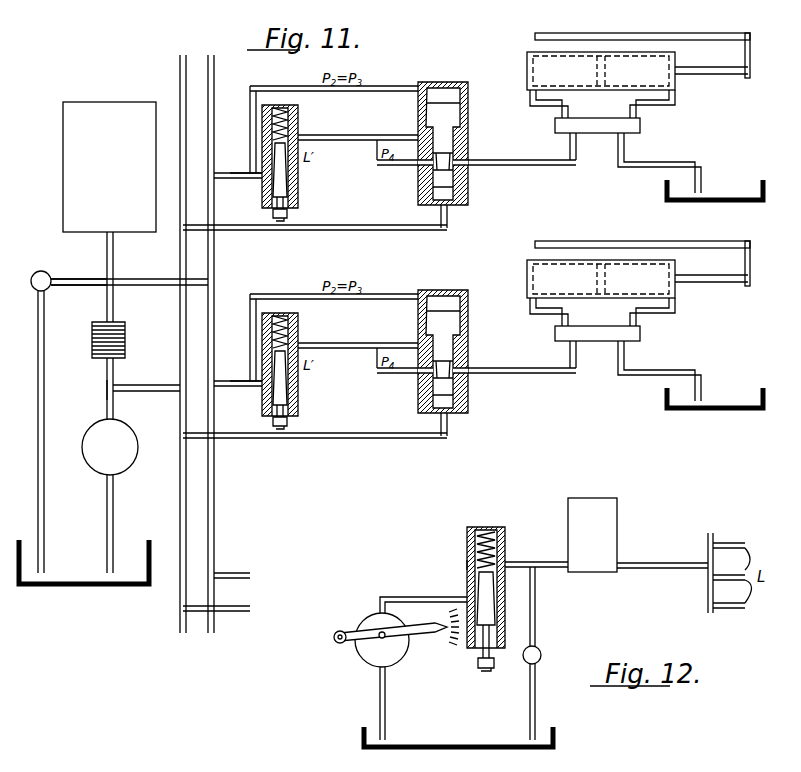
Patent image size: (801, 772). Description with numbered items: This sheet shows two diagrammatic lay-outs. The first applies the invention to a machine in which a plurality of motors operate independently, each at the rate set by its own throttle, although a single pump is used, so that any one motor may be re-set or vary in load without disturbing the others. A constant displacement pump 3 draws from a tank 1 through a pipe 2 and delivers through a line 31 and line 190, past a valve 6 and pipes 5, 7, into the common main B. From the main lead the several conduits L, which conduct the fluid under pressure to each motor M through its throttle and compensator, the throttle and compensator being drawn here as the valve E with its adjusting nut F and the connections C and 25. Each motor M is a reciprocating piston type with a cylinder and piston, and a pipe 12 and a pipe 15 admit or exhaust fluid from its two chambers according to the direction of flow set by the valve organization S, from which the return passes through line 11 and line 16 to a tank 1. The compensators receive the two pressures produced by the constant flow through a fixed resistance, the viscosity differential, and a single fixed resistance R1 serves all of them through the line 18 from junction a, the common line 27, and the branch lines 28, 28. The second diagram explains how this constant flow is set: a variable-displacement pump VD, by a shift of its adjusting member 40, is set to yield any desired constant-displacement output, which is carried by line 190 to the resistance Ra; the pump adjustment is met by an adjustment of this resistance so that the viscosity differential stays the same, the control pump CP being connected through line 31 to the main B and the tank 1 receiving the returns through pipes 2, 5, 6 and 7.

In FIG. 11, the reservoir tank 1 is at (152, 560).
In FIG. 12, the reservoir tank 1 is at (360, 738).
In FIG. 11, the suction pipe 2 is at (113, 516).
In FIG. 12, the suction pipe 2 is at (385, 707).
In FIG. 11, the constant displacement pump 3 is at (138, 445).
In FIG. 11, the pressure pipe 5 is at (87, 279).
In FIG. 12, the pressure pipe 5 is at (535, 610).
In FIG. 11, the valve 6 is at (48, 274).
In FIG. 12, the valve 6 is at (541, 654).
In FIG. 11, the return pipe 7 is at (44, 364).
In FIG. 12, the return pipe 7 is at (535, 704).
In FIG. 11, the pipe to slide valve 11 is at (538, 170).
In FIG. 11, the pipe 12 is at (675, 100).
In FIG. 11, the pipe 15 is at (530, 102).
In FIG. 11, the return pipe to tank 16 is at (690, 156).
In FIG. 11, the line 18 is at (157, 386).
In FIG. 11, the pressure pipe 25 is at (268, 88).
In FIG. 11, the common line 27 is at (180, 475).
In FIG. 11, the branch lines 28 is at (250, 611).
In FIG. 11, the line 31 is at (113, 238).
In FIG. 12, the line 31 is at (532, 562).
In FIG. 12, the adjusting member 40 is at (418, 634).
In FIG. 11, the line 190 is at (165, 280).
In FIG. 12, the line 190 is at (407, 603).
In FIG. 11, the common main B is at (214, 262).
In FIG. 12, the common main B is at (708, 540).
In FIG. 11, the conduits L is at (238, 367).
In FIG. 11, the pipe C is at (250, 180).
In FIG. 11, the relief valve E is at (280, 260).
In FIG. 12, the relief valve E is at (486, 587).
In FIG. 11, the adjusting nut F is at (289, 215).
In FIG. 12, the adjusting nut F is at (495, 664).
In FIG. 11, the valve organization S is at (555, 128).
In FIG. 11, the motor M is at (518, 85).
In FIG. 11, the control pump CP is at (109, 167).
In FIG. 12, the control pump CP is at (592, 535).
In FIG. 11, the fixed resistance R1 is at (125, 336).
In FIG. 12, the resistance Ra is at (467, 565).
In FIG. 12, the variable-displacement pump VD is at (382, 640).
In FIG. 11, the junction point a is at (107, 390).